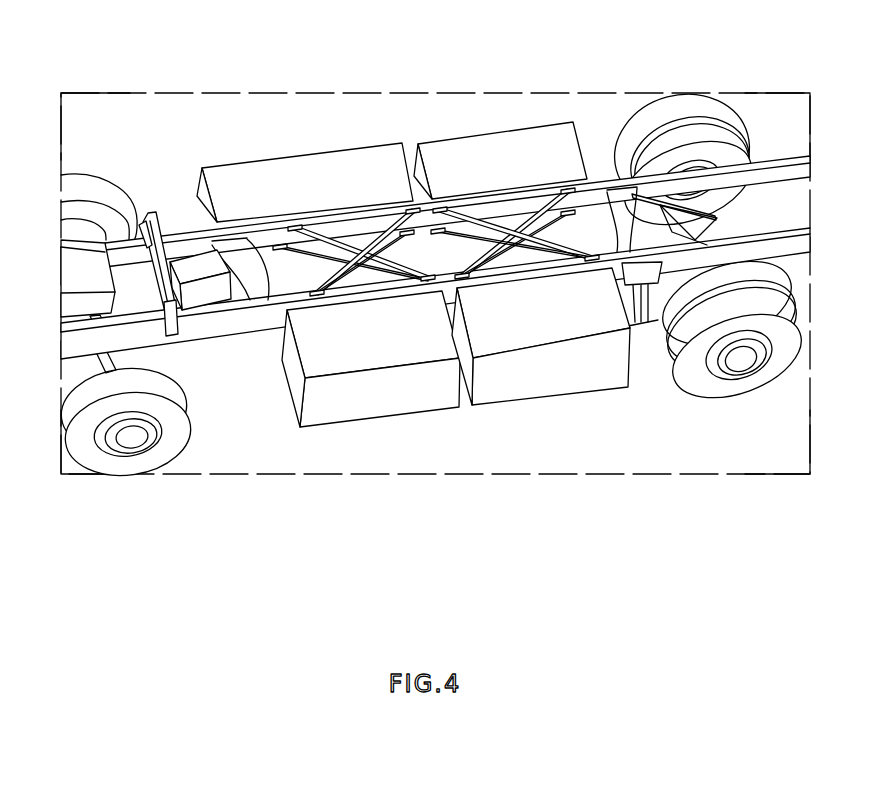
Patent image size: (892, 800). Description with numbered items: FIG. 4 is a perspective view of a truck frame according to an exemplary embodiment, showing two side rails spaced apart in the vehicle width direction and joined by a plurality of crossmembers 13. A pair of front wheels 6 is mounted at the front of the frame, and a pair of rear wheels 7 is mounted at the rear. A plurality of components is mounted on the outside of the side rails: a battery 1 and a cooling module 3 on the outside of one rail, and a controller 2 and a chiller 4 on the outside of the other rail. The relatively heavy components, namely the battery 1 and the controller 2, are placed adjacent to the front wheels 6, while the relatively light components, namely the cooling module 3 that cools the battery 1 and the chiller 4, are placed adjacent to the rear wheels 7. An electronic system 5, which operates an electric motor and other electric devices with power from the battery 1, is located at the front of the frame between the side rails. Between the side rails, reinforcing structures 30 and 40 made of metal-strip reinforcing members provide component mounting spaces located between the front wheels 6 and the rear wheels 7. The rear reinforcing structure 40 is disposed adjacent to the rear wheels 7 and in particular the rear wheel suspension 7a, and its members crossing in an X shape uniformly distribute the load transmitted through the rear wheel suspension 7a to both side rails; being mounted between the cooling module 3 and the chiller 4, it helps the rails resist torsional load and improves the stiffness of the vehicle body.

The battery 1 is at (307, 171).
The controller 2 is at (418, 410).
The cooling module 3 is at (495, 143).
The chiller 4 is at (555, 394).
The electronic system 5 is at (197, 267).
The front wheels 6 is at (102, 190).
The rear wheels 7 is at (707, 243).
The rear wheel suspension 7a is at (680, 196).
The crossmembers 13 is at (620, 195).
The reinforcing structure 30 is at (406, 258).
The rear reinforcing structure 40 is at (562, 236).